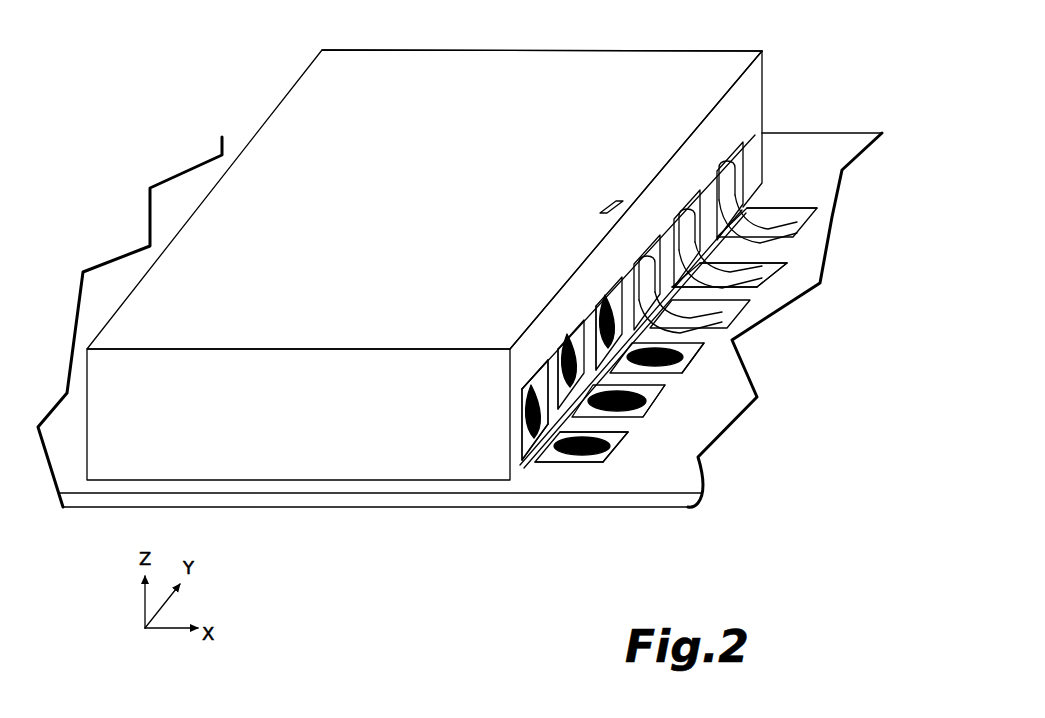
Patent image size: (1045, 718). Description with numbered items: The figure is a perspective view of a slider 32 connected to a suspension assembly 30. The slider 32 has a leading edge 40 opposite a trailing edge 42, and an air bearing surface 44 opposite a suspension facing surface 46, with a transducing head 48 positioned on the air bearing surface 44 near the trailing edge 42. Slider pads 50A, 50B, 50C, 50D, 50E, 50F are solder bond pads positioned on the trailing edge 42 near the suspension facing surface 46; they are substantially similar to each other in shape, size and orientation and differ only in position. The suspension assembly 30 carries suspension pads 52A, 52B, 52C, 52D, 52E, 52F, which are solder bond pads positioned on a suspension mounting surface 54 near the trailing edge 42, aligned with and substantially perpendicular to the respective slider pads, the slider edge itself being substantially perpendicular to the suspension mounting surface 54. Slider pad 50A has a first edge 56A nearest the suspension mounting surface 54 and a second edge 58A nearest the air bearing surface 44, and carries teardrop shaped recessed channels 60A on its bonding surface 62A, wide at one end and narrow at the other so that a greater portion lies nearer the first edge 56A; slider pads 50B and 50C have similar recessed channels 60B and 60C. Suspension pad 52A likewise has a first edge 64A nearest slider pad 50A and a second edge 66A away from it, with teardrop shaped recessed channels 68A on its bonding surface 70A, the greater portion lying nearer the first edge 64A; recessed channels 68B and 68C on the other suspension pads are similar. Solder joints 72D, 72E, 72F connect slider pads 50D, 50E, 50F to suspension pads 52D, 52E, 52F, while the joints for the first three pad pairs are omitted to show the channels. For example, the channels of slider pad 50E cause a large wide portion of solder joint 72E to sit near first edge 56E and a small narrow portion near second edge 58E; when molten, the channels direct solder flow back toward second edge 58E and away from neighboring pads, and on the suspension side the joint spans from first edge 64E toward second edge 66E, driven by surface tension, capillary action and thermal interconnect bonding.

The suspension assembly 30 is at (216, 137).
The slider 32 is at (318, 49).
The leading edge 40 is at (283, 100).
The trailing edge 42 is at (747, 90).
The air bearing surface 44 is at (336, 190).
The suspension facing surface 46 is at (312, 482).
The transducing head 48 is at (605, 200).
The slider pad 50A is at (517, 386).
The slider pad 50B is at (561, 339).
The slider pad 50C is at (600, 291).
The slider pad 50D is at (636, 245).
The slider pad 50E is at (681, 192).
The slider pad 50F is at (728, 136).
The suspension pad 52A is at (645, 420).
The suspension pad 52B is at (698, 458).
The suspension pad 52C is at (742, 412).
The suspension pad 52D is at (735, 343).
The suspension pad 52E is at (823, 284).
The suspension pad 52F is at (791, 200).
The suspension mounting surface 54 is at (811, 161).
The first edge 56A is at (525, 445).
The first edge 56E is at (662, 232).
The second edge 58A is at (524, 352).
The second edge 58E is at (697, 240).
The recessed channels 60A is at (534, 375).
The recessed channels 60B is at (570, 305).
The recessed channels 60C is at (608, 248).
The bonding surface 62A is at (522, 400).
The first edge 64A is at (548, 463).
The first edge 64E is at (795, 300).
The second edge 66A is at (617, 463).
The second edge 66E is at (770, 224).
The recessed channels 68A is at (630, 444).
The recessed channels 68B is at (653, 421).
The recessed channels 68C is at (727, 336).
The bonding surface 70A is at (583, 462).
The solder joint 72D is at (732, 318).
The solder joint 72E is at (766, 282).
The solder joint 72F is at (817, 208).